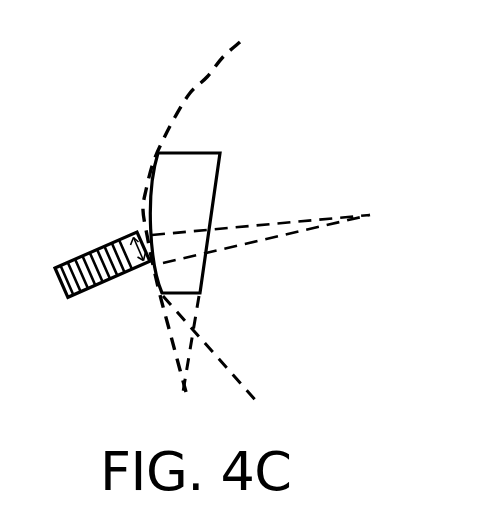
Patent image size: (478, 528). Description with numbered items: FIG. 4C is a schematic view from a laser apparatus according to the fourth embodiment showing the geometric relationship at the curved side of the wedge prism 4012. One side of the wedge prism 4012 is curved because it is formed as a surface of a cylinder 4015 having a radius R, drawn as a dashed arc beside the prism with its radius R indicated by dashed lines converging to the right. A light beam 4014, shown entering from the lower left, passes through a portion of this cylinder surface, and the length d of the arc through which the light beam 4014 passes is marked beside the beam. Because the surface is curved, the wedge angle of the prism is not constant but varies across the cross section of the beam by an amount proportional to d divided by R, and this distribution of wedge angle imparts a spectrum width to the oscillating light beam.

The wedge prism 4012 is at (207, 168).
The light beam 4014 is at (68, 300).
The cylinder 4015 is at (176, 117).
The radius R is at (261, 227).
The arc length d is at (130, 236).